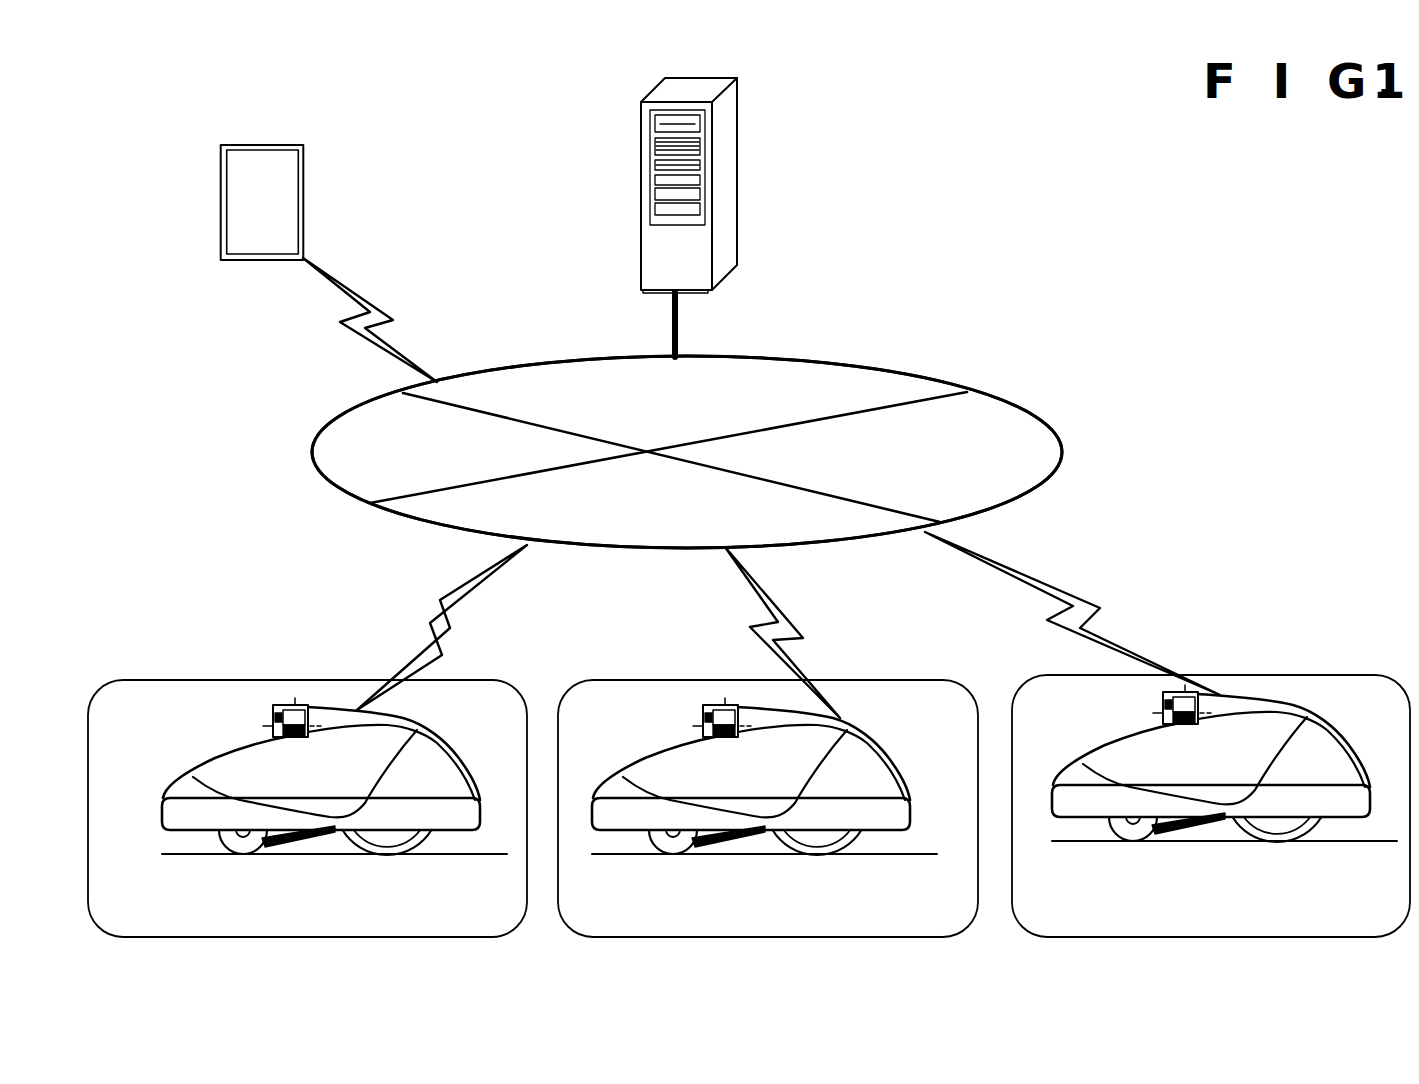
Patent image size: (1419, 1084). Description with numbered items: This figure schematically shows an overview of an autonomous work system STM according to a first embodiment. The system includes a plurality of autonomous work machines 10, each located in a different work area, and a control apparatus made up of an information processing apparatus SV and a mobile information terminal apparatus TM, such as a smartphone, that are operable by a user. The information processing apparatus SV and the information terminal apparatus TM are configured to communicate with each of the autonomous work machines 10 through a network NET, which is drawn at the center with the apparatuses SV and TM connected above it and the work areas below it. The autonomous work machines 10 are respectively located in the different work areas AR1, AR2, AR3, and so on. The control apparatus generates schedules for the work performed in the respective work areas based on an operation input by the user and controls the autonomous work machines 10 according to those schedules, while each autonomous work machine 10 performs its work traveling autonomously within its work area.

The autonomous work system STM is at (1181, 296).
The network NET is at (902, 372).
The information terminal apparatus TM is at (267, 146).
The information processing apparatus SV is at (738, 143).
The work area AR1 is at (203, 678).
The work area AR2 is at (668, 680).
The work area AR3 is at (1256, 675).
The autonomous work machine 10 is at (448, 829).